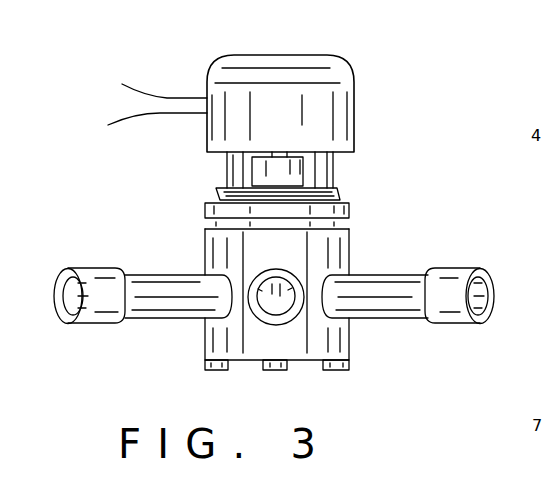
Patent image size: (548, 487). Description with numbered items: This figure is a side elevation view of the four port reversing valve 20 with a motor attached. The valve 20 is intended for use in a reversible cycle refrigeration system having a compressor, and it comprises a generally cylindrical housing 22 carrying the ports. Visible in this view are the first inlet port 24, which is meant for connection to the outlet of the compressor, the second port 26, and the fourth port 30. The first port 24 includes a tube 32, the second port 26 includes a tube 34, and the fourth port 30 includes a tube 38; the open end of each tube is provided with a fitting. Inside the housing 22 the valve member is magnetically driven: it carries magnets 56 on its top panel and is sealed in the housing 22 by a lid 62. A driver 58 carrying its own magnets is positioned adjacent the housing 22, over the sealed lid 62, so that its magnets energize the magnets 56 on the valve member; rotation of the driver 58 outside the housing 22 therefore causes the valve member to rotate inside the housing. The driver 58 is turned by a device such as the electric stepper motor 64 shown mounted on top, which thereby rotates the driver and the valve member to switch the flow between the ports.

The reversing valve 20 is at (372, 202).
The housing 22 is at (343, 335).
The first inlet port 24 is at (280, 330).
The second port 26 is at (158, 330).
The fourth port 30 is at (400, 262).
The tube 32 is at (278, 268).
The tube 34 is at (172, 287).
The tube 38 is at (393, 298).
The magnets 56 is at (268, 177).
The driver 58 is at (333, 150).
The lid 62 is at (352, 205).
The electric stepper motor 64 is at (293, 55).